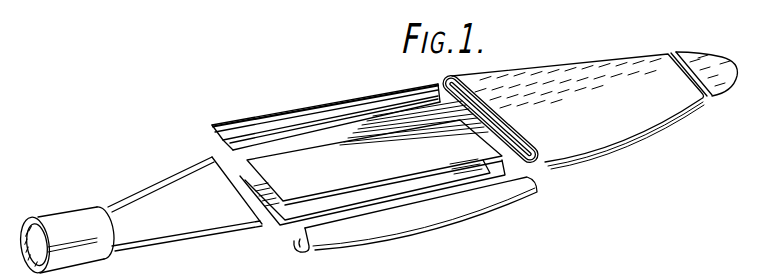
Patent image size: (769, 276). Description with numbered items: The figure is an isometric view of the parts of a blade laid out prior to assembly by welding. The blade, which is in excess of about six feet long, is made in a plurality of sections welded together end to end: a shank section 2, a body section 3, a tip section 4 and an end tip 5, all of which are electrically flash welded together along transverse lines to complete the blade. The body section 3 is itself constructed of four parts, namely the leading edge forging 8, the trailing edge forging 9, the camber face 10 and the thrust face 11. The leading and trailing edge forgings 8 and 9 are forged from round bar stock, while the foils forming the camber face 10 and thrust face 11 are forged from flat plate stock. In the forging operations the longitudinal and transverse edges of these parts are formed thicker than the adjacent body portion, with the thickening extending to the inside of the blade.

The shank section 2 is at (133, 192).
The body section 3 is at (255, 116).
The tip section 4 is at (622, 138).
The end tip 5 is at (722, 71).
The leading edge forging 8 is at (475, 213).
The trailing edge forging 9 is at (322, 104).
The camber face 10 is at (280, 228).
The thrust face 11 is at (263, 156).